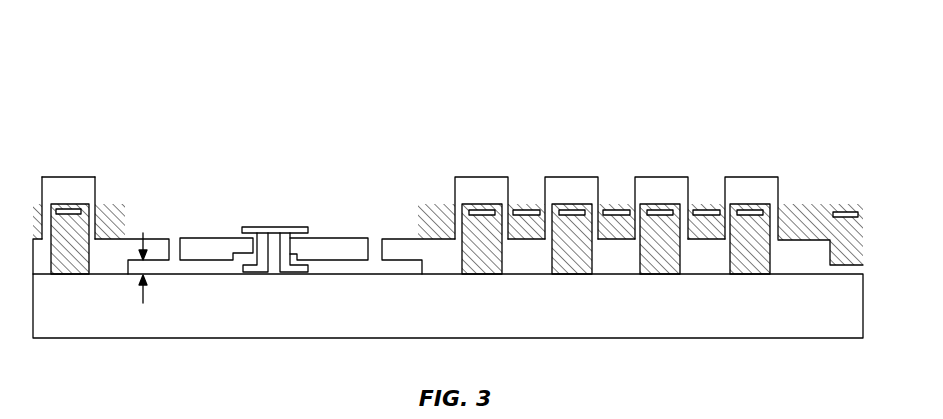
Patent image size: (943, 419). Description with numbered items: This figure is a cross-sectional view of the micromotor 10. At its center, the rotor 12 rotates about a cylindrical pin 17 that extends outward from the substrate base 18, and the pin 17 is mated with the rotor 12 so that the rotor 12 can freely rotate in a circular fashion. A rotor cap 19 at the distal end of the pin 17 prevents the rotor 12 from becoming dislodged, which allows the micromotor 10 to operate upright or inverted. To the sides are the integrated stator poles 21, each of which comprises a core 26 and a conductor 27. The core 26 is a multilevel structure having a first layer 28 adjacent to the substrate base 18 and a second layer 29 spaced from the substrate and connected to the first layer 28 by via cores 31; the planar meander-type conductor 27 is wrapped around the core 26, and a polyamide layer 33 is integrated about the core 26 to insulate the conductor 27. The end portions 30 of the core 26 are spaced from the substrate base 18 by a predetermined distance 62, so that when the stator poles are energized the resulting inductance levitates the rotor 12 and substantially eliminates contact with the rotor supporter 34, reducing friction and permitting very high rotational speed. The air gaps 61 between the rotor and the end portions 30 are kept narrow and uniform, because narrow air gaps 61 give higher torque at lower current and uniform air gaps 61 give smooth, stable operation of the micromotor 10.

The micromotor 10 is at (523, 82).
The rotor 12 is at (333, 237).
The pin 17 is at (277, 256).
The substrate base 18 is at (358, 312).
The rotor cap 19 is at (259, 227).
The stator pole 21 is at (728, 132).
The core 26 is at (572, 178).
The conductor 27 is at (72, 210).
The first layer 28 is at (113, 262).
The second layer 29 is at (448, 178).
The end portions 30 is at (158, 238).
The via cores 31 is at (778, 222).
The polyamide layer 33 is at (435, 213).
The rotor supporter 34 is at (253, 262).
The air gaps 61 is at (250, 238).
The predetermined distance 62 is at (150, 268).